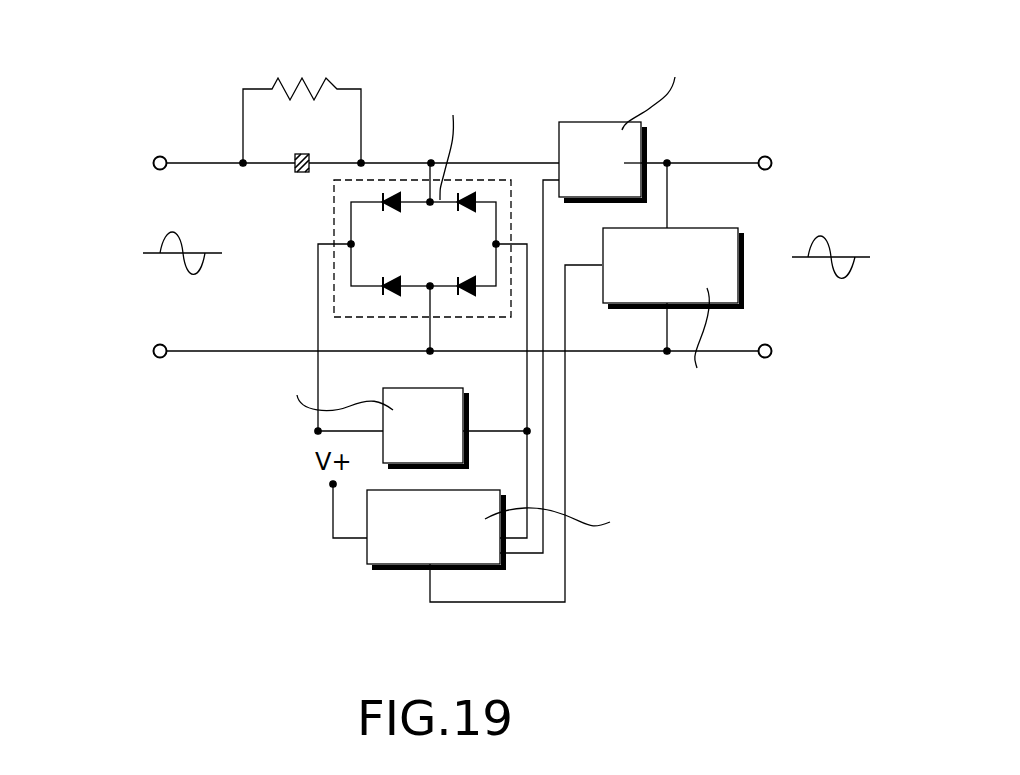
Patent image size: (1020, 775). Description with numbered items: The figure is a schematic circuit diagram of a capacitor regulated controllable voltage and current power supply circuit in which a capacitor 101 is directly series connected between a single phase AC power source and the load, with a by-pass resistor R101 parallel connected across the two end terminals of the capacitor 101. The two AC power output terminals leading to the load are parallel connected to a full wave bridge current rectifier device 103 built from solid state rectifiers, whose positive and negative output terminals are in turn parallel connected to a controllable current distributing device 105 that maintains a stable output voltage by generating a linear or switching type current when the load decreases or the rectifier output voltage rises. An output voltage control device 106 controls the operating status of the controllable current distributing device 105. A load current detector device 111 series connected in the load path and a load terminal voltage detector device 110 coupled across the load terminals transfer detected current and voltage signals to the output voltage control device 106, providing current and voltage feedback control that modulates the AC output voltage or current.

The by-pass resistor R101 is at (302, 103).
The capacitor 101 is at (299, 147).
The current rectifier device 103 is at (422, 218).
The controllable current distributing device 105 is at (270, 424).
The output voltage control device 106 is at (569, 530).
The load terminal voltage detector device 110 is at (719, 319).
The load current detector device 111 is at (688, 124).